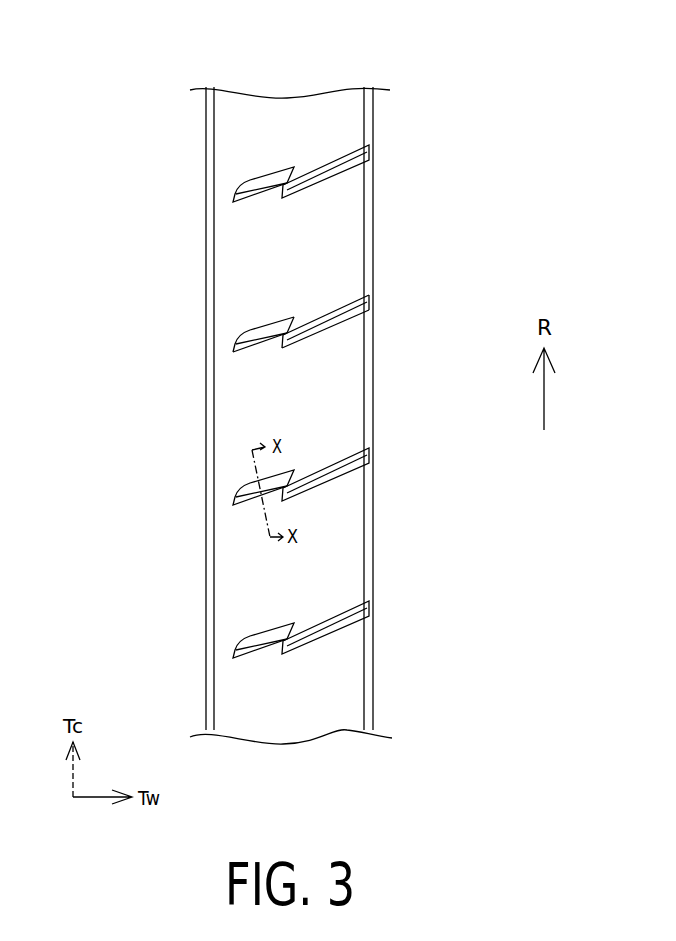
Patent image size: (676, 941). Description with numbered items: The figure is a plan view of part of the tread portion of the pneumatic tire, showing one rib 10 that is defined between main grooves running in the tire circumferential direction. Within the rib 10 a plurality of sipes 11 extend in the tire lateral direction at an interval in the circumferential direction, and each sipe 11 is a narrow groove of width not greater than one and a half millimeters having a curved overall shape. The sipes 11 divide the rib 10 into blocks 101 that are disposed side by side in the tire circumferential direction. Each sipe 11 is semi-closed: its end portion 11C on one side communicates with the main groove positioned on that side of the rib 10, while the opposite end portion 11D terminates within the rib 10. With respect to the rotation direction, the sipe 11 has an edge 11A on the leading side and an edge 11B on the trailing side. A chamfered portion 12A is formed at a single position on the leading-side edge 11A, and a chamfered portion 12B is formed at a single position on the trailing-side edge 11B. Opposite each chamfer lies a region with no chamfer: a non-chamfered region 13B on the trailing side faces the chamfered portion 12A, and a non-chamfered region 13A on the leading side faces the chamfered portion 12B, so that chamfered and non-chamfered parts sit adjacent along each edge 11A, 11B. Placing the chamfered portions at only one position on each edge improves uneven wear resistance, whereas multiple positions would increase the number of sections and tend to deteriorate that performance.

The rib 10 is at (383, 62).
The block 101 is at (295, 235).
The sipe 11 is at (287, 336).
The edge on the leading side 11A is at (267, 333).
The edge on the trailing side 11B is at (302, 347).
The end portion 11C is at (369, 296).
The end portion 11D is at (237, 356).
The chamfered portion on the leading side 12A is at (241, 335).
The chamfered portion on the trailing side 12B is at (325, 330).
The non-chamfered region on the leading side 13A is at (328, 310).
The non-chamfered region on the trailing side 13B is at (257, 356).